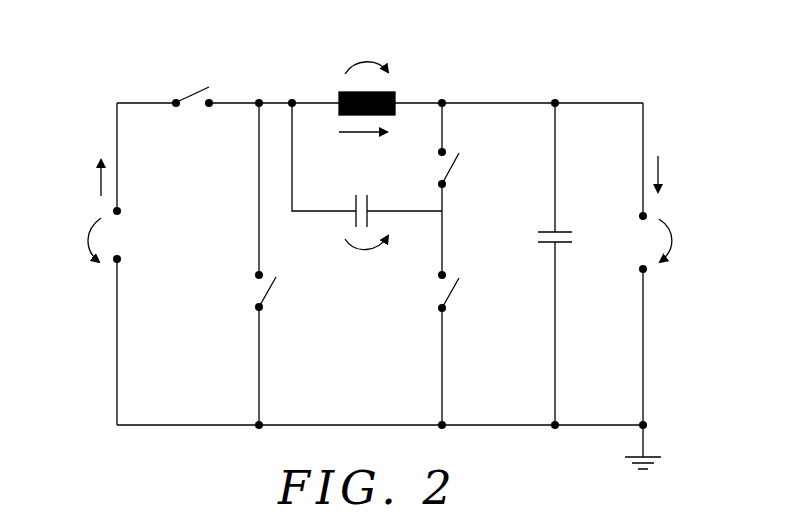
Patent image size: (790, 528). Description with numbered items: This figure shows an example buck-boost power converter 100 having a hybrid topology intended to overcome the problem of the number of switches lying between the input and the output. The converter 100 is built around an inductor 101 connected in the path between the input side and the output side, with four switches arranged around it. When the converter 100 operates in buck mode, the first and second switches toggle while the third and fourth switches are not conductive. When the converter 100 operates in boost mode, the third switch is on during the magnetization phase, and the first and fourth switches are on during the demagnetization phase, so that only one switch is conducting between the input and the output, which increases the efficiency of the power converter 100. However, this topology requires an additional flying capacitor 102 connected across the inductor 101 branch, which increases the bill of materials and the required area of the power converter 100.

The power converter 100 is at (172, 44).
The inductor 101 is at (340, 97).
The flying capacitor 102 is at (352, 206).